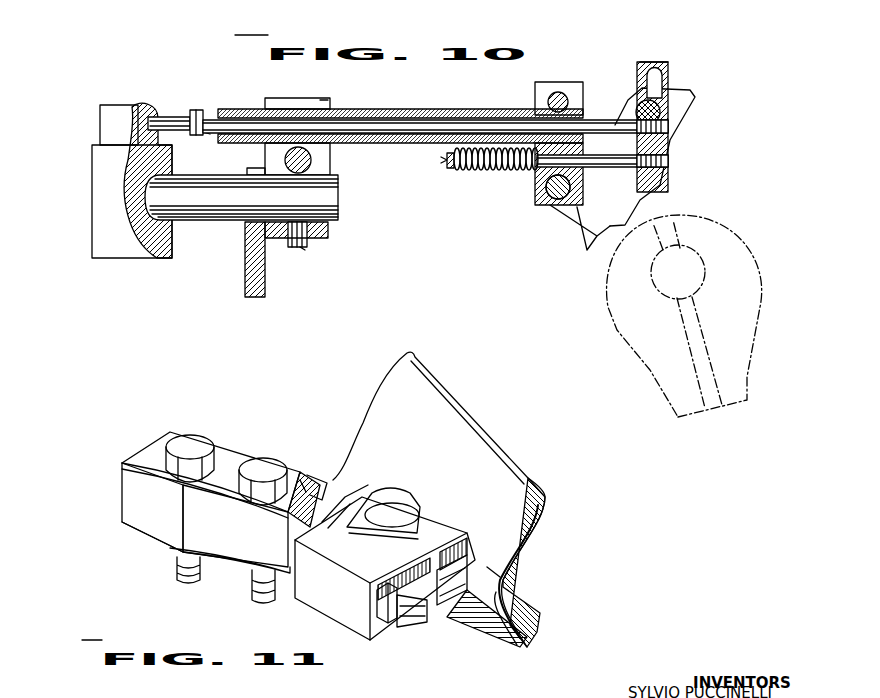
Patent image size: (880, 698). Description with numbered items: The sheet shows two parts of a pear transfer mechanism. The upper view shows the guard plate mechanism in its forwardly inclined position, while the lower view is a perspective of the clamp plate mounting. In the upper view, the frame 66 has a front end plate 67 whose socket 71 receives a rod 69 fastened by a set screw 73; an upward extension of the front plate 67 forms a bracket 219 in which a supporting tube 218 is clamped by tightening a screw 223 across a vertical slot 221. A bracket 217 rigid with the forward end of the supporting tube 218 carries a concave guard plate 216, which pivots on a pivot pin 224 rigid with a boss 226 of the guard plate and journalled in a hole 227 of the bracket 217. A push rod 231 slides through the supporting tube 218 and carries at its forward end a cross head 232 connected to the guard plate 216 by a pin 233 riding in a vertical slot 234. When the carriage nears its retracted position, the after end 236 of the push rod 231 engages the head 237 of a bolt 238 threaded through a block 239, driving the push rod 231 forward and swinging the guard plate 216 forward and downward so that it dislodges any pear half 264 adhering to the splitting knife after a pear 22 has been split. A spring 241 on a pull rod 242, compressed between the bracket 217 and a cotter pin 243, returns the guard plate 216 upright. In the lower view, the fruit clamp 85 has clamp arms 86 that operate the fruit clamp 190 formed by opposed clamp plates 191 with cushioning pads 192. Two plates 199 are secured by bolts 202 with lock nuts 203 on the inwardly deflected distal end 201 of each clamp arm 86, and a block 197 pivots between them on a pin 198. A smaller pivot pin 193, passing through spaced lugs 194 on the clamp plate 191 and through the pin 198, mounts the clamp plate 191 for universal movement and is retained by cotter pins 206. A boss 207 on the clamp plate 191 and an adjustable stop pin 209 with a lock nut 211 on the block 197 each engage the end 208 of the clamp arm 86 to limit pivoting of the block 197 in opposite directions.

In FIG. 10, the pear 22 is at (643, 344).
In FIG. 10, the pear half 264 is at (643, 294).
In FIG. 10, the frame 66 is at (314, 241).
In FIG. 10, the front end plate 67 is at (260, 291).
In FIG. 10, the rod 69 is at (241, 197).
In FIG. 10, the socket 71 is at (331, 231).
In FIG. 10, the set screw 73 is at (301, 249).
In FIG. 10, the guard plate 216 is at (680, 106).
In FIG. 10, the bracket 217 is at (574, 93).
In FIG. 10, the supporting tube 218 is at (492, 96).
In FIG. 10, the bracket 219 is at (318, 105).
In FIG. 10, the vertical slot 221 is at (305, 90).
In FIG. 10, the screw 223 is at (312, 160).
In FIG. 10, the pivot pin 224 is at (548, 188).
In FIG. 10, the boss 226 is at (577, 208).
In FIG. 10, the hole 227 is at (543, 206).
In FIG. 10, the push rod 231 is at (403, 126).
In FIG. 10, the cross head 232 is at (655, 62).
In FIG. 10, the pin 233 is at (670, 122).
In FIG. 10, the vertical slot 234 is at (664, 79).
In FIG. 10, the after end 236 is at (210, 118).
In FIG. 10, the head 237 is at (197, 140).
In FIG. 10, the bolt 238 is at (164, 123).
In FIG. 10, the block 239 is at (118, 113).
In FIG. 10, the spring 241 is at (464, 171).
In FIG. 10, the pull rod 242 is at (445, 158).
In FIG. 10, the cotter pin 243 is at (448, 168).
In FIG. 11, the fruit clamp 85 is at (119, 459).
In FIG. 11, the clamp arm 86 is at (142, 501).
In FIG. 11, the fruit clamp 190 is at (537, 451).
In FIG. 11, the clamp plate 191 is at (513, 556).
In FIG. 11, the pad 192 is at (541, 516).
In FIG. 11, the pivot pin 193 is at (502, 583).
In FIG. 11, the lug 194 is at (346, 497).
In FIG. 11, the block 197 is at (385, 568).
In FIG. 11, the pin 198 is at (396, 513).
In FIG. 11, the plate 199 is at (175, 546).
In FIG. 11, the distal end 201 is at (235, 526).
In FIG. 11, the bolt 202 is at (196, 446).
In FIG. 11, the lock nut 203 is at (253, 570).
In FIG. 11, the cotter pin 206 is at (470, 555).
In FIG. 11, the boss 207 is at (337, 483).
In FIG. 11, the end 208 is at (300, 483).
In FIG. 11, the adjustable stop pin 209 is at (404, 624).
In FIG. 11, the lock nut 211 is at (394, 626).